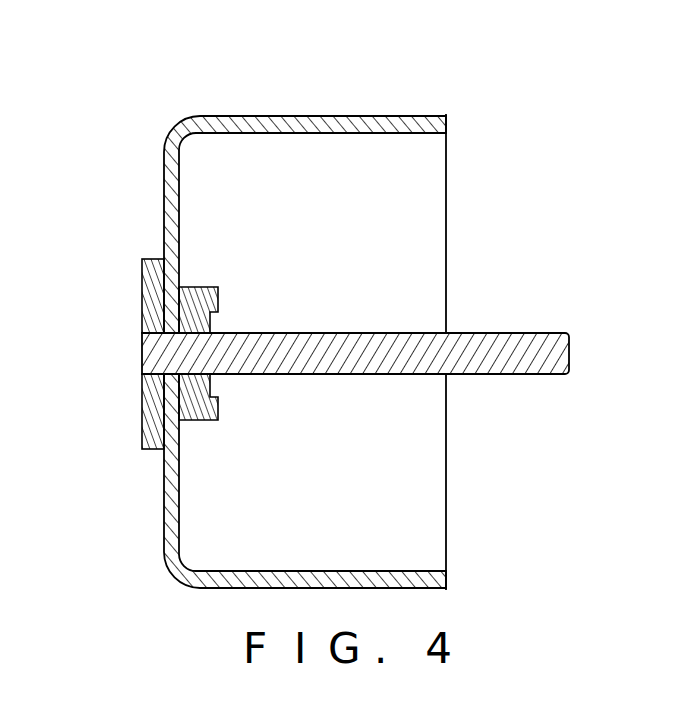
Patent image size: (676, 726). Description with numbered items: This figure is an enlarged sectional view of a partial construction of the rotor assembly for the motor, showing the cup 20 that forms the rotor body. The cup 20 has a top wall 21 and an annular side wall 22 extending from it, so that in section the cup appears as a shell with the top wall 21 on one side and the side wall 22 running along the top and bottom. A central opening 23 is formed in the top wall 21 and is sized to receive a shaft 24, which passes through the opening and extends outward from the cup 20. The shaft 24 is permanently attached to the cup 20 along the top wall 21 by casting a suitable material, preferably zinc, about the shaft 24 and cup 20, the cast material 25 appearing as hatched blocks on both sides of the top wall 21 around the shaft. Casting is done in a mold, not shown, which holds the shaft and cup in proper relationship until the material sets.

The cup 20 is at (311, 318).
The top wall 21 is at (164, 210).
The annular side wall 22 is at (403, 513).
The central opening 23 is at (160, 375).
The shaft 24 is at (510, 352).
The cast material 25 is at (150, 306).